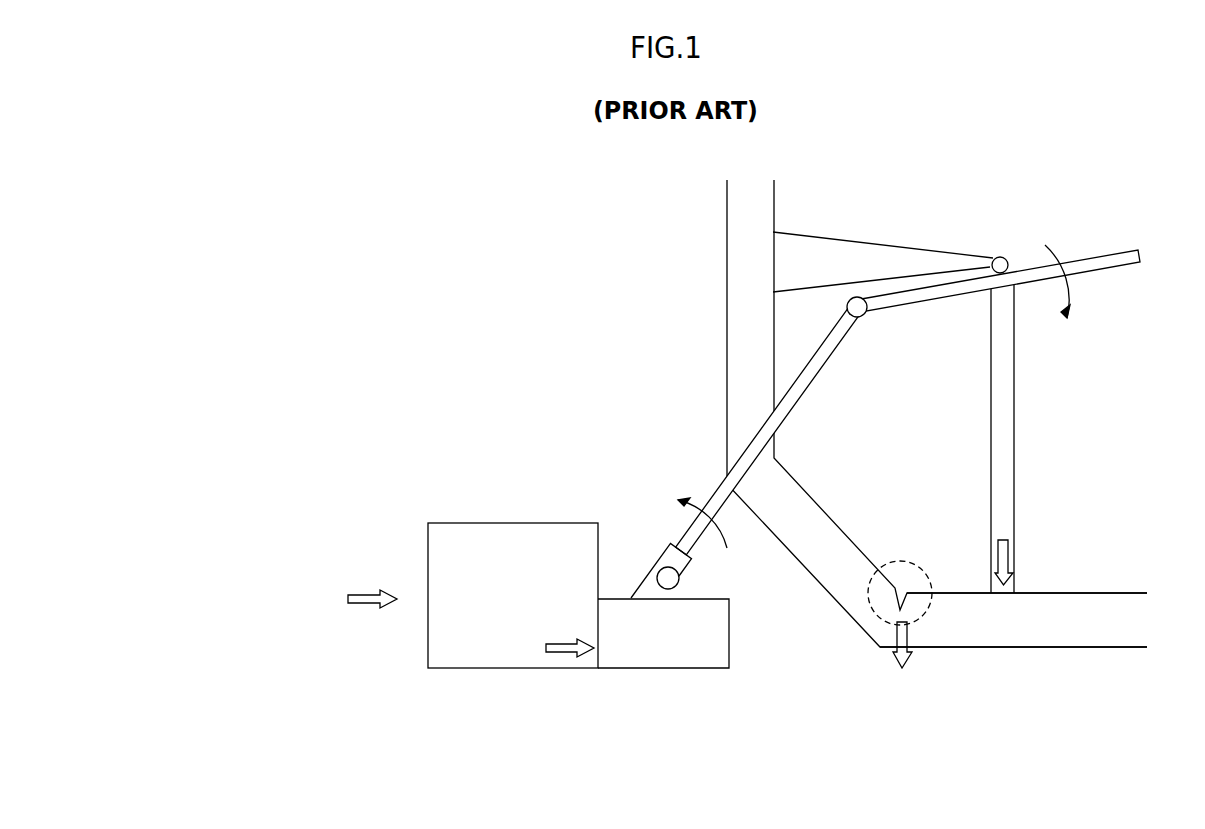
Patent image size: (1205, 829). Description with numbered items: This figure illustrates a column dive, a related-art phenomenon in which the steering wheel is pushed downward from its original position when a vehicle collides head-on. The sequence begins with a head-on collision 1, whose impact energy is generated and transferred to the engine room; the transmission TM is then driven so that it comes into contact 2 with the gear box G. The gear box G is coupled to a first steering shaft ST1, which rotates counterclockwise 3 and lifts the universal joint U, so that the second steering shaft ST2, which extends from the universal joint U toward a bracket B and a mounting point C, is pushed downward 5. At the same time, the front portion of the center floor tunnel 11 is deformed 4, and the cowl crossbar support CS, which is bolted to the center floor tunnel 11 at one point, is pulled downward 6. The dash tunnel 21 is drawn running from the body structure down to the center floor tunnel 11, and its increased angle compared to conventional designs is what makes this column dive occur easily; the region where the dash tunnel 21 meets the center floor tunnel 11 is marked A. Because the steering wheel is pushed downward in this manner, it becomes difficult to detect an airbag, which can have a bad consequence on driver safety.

The head-on collision step 1 is at (287, 585).
The transmission contact step 2 is at (569, 635).
The first steering shaft rotation step 3 is at (702, 509).
The center floor tunnel deformation step 4 is at (922, 644).
The second steering shaft push step 5 is at (1075, 281).
The cowl crossbar support pull step 6 is at (1021, 562).
The transmission TM is at (502, 638).
The steering gear box S is at (660, 645).
The gear box G is at (679, 585).
The first steering shaft ST1 is at (812, 368).
The second steering shaft ST2 is at (943, 292).
The universal joint U is at (860, 300).
The bracket B is at (833, 240).
The column mounting pivot C is at (1001, 259).
The cowl crossbar support CS is at (1005, 442).
The dash tunnel 21 is at (822, 533).
The center floor tunnel 11 is at (1077, 633).
The fracture region A is at (900, 581).